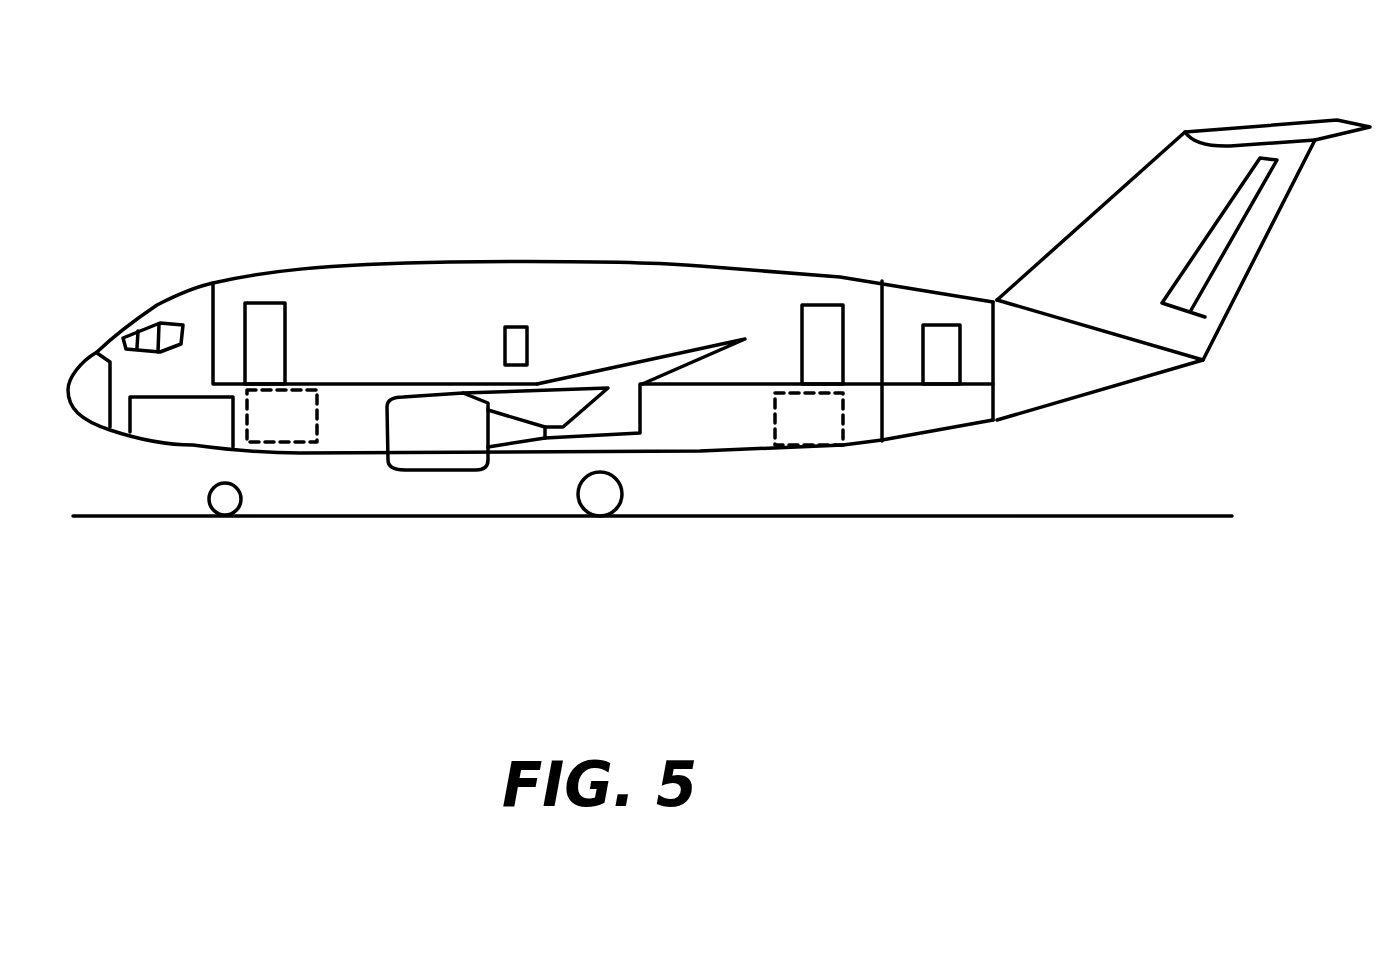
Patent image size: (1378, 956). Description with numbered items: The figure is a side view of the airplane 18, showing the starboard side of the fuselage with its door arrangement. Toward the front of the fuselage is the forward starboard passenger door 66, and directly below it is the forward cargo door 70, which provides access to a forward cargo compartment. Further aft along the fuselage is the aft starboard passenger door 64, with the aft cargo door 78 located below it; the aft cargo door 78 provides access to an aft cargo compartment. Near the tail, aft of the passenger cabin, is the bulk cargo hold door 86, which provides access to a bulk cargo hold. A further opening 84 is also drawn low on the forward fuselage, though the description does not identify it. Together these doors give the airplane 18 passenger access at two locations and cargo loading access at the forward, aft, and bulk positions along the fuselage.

The airplane 18 is at (790, 140).
The aft starboard passenger door 64 is at (827, 318).
The forward starboard passenger door 66 is at (262, 318).
The forward cargo door 70 is at (287, 422).
The aft cargo door 78 is at (810, 422).
The forward equipment bay 84 is at (178, 428).
The bulk cargo hold door 86 is at (940, 368).